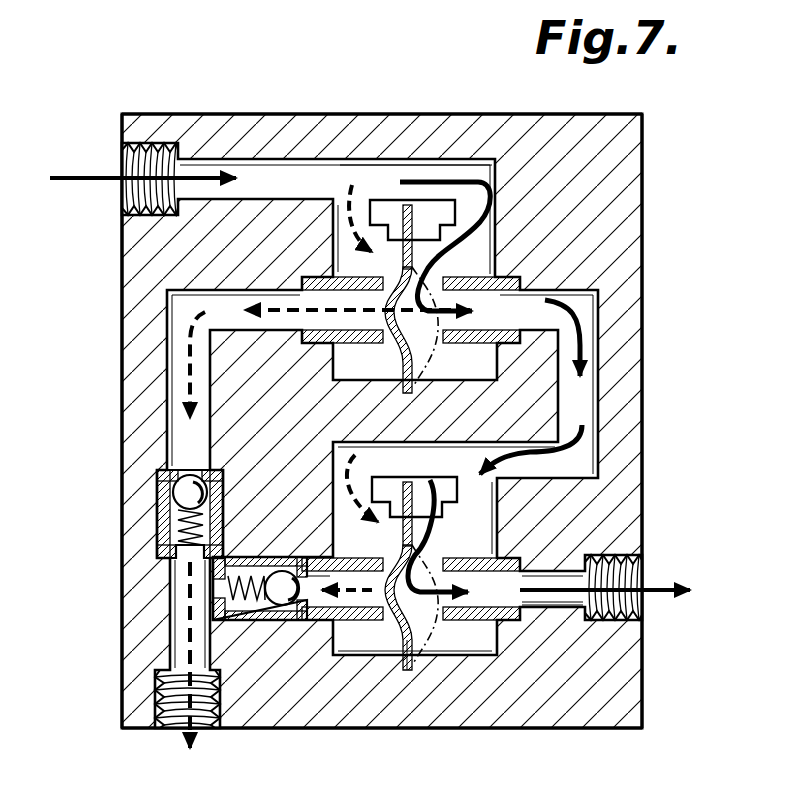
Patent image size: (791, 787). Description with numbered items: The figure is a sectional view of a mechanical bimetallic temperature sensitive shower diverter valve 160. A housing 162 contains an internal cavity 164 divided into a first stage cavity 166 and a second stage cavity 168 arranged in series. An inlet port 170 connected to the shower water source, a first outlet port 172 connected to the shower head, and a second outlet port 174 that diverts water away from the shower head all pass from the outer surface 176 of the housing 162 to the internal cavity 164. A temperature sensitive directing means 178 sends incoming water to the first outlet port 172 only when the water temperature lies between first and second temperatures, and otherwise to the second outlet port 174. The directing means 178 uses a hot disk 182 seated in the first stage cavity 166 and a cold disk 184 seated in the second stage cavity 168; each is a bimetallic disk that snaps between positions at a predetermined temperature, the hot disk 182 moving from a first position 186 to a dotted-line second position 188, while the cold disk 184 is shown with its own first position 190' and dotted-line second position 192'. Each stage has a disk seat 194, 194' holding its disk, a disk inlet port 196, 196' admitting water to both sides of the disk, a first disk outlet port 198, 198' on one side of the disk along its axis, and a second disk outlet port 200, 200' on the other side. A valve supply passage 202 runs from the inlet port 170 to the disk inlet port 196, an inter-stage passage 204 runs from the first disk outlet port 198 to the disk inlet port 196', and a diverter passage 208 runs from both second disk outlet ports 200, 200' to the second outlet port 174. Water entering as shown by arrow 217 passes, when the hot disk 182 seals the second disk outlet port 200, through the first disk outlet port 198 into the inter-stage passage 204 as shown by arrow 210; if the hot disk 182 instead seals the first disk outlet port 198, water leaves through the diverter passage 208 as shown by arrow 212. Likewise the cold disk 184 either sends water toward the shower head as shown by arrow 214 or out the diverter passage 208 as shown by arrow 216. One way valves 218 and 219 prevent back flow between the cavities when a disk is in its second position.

The temperature sensitive shower diverter valve 160 is at (100, 455).
The housing 162 is at (158, 520).
The internal cavity 164 is at (600, 466).
The first stage cavity 166 is at (540, 214).
The second stage cavity 168 is at (560, 552).
The inlet port 170 is at (98, 150).
The first outlet port 172 is at (622, 654).
The second outlet port 174 is at (156, 716).
The outer surface 176 is at (216, 114).
The temperature sensitive directing means 178 is at (685, 408).
The hot disk 182 is at (366, 142).
The cold disk 184 is at (404, 668).
The first position 186 is at (160, 238).
The second position 188 is at (560, 264).
The lower cavity 190' is at (389, 707).
The diaphragm stem 192' is at (425, 702).
The disk seat 194 is at (412, 166).
The disk seat 194' is at (513, 542).
The disk inlet port 196 is at (605, 204).
The disk inlet port 196' is at (535, 504).
The first disk outlet port 198 is at (610, 304).
The first disk outlet port 198' is at (411, 685).
The second disk outlet port 200 is at (309, 509).
The second disk outlet port 200' is at (297, 670).
The valve supply passage 202 is at (274, 134).
The inter-stage passage 204 is at (580, 442).
The diverter passage 208 is at (160, 370).
The arrow 210 is at (580, 334).
The arrow 212 is at (160, 574).
The arrow 214 is at (646, 597).
The arrow 216 is at (160, 618).
The arrow 217 is at (110, 168).
The one way valve 218 is at (160, 472).
The one way valve 219 is at (124, 658).